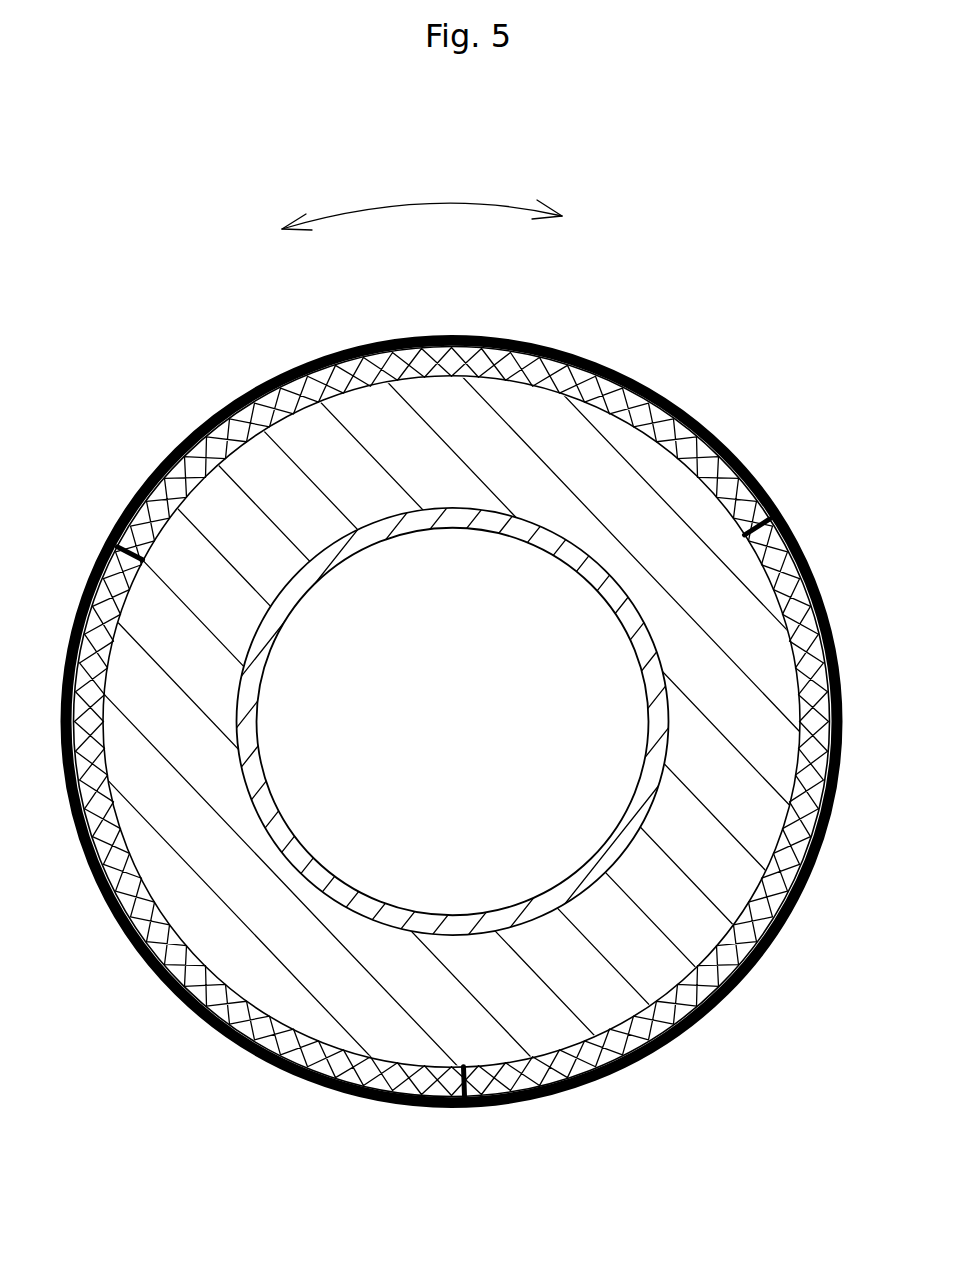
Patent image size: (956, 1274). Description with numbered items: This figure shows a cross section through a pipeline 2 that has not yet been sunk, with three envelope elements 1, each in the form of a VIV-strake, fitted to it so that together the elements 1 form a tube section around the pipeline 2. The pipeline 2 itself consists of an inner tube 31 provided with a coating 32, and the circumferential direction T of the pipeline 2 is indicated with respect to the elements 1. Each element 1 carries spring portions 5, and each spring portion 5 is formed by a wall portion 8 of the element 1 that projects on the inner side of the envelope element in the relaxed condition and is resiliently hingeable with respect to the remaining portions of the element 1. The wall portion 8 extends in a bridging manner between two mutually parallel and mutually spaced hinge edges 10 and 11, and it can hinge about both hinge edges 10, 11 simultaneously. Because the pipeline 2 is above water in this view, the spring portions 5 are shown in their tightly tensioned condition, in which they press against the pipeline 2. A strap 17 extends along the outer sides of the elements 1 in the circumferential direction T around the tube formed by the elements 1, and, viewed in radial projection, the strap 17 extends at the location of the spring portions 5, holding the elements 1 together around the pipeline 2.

The circumferential direction T is at (468, 200).
The envelope element 1 is at (560, 358).
The pipeline 2 is at (478, 721).
The spring portion 5 is at (451, 678).
The wall portion 8 is at (451, 694).
The hinge edge 10 is at (172, 478).
The hinge edge 11 is at (452, 698).
The strap 17 is at (452, 698).
The inner tube 31 is at (250, 668).
The coating 32 is at (165, 797).